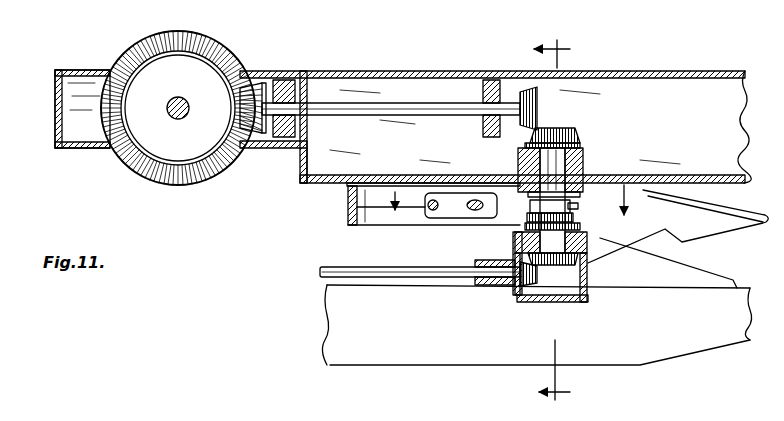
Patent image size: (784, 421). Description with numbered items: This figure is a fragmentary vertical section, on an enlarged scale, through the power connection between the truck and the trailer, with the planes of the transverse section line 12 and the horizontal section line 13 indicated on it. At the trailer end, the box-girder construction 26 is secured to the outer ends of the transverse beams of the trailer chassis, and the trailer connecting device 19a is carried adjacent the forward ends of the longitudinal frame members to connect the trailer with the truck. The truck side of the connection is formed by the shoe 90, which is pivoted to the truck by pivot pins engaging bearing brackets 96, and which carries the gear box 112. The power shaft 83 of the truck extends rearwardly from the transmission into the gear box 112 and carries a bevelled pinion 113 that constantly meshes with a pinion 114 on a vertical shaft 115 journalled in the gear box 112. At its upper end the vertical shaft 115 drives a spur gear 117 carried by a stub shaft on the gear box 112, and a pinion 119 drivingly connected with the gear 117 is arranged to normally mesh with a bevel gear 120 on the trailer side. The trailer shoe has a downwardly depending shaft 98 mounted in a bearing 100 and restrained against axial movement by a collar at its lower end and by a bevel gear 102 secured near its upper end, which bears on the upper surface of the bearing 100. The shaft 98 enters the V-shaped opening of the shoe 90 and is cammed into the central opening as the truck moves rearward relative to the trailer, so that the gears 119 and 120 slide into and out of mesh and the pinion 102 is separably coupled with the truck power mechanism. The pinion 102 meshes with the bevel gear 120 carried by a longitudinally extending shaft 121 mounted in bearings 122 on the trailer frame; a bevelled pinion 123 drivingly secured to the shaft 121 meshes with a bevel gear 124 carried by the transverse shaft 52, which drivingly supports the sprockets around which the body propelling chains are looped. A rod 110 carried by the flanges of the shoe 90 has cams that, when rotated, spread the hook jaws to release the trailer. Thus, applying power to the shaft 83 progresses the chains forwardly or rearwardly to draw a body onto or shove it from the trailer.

The box-girder construction 26 is at (403, 126).
The bevel gear 124 is at (233, 53).
The transverse shaft 52 is at (185, 90).
The bevelled pinion 123 is at (259, 85).
The bearing 122 is at (290, 82).
The longitudinally extending shaft 121 is at (373, 103).
The bevel gear 120 is at (537, 102).
The bevel gear 102 is at (577, 131).
The shaft 98 is at (557, 167).
The bearing 100 is at (585, 172).
The spur gear 117 is at (578, 228).
The pinion 119 is at (555, 223).
The gear box 112 is at (588, 281).
The pinion 114 is at (575, 260).
The bevelled pinion 113 is at (536, 279).
The power shaft 83 is at (360, 257).
The vertical shaft 115 is at (513, 235).
The bearing bracket 96 is at (693, 270).
The shoe 90 is at (712, 200).
The trailer connecting device 19a is at (348, 206).
The rod 110 is at (477, 195).
The section line 12- 12 is at (550, 230).
The section line 13- 13 is at (513, 205).